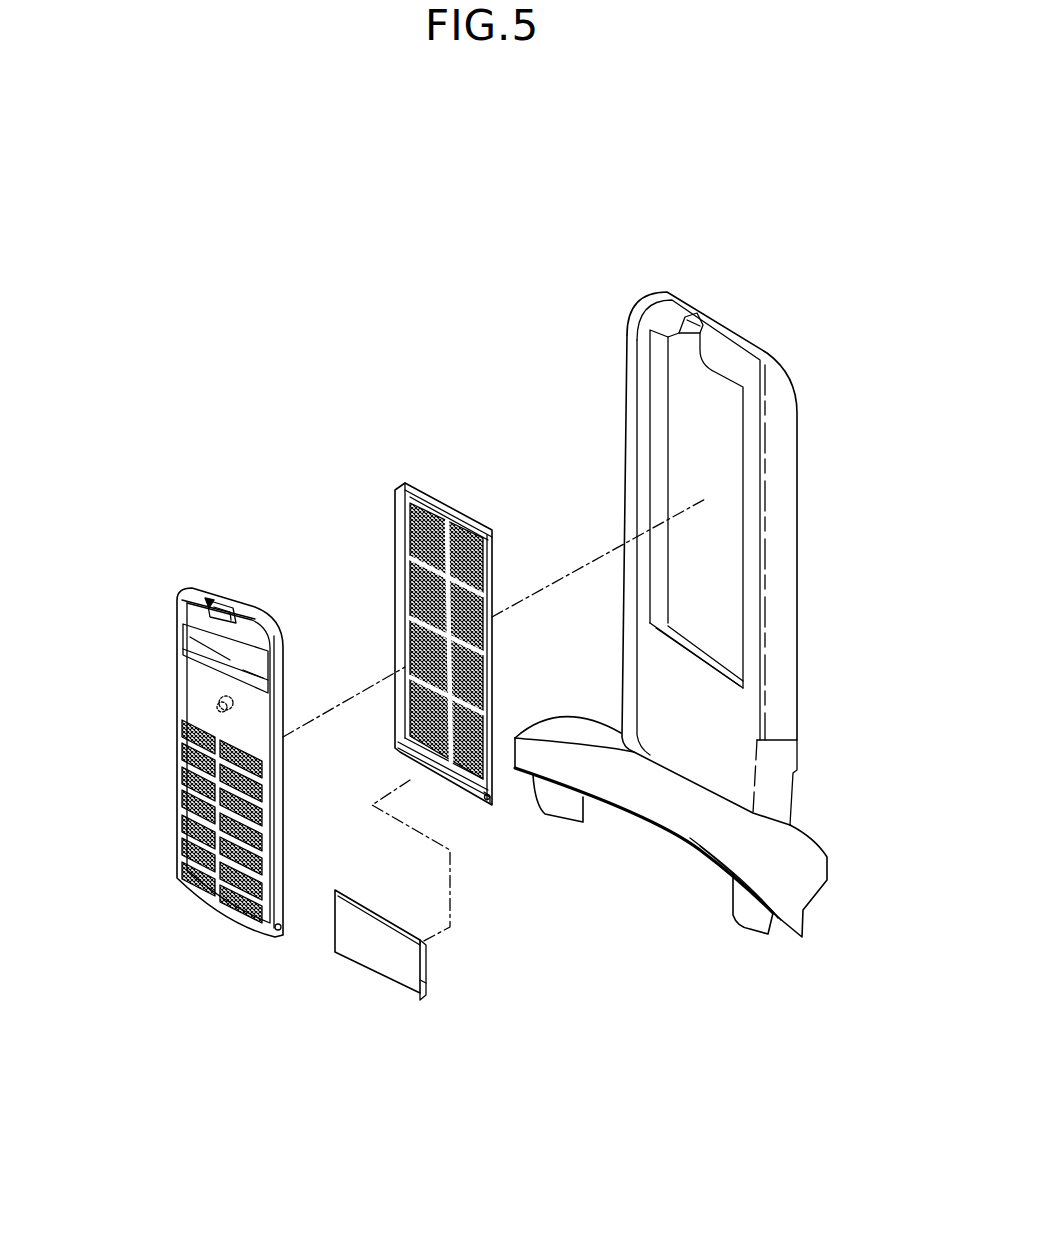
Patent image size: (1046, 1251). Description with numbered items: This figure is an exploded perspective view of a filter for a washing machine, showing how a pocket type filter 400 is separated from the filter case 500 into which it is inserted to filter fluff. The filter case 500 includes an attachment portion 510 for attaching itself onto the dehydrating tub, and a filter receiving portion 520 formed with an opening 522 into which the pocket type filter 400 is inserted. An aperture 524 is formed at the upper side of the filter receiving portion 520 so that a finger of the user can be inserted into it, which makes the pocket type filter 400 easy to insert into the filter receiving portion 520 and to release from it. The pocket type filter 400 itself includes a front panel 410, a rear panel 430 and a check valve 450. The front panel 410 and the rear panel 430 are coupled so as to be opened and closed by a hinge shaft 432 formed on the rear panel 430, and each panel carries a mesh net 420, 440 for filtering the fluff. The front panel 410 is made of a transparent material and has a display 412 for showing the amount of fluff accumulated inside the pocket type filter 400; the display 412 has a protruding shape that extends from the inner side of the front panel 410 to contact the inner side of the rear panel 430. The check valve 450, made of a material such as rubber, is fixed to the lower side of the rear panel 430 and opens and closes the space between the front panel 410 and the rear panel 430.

The pocket type filter 400 is at (272, 410).
The front panel 410 is at (193, 663).
The display 412 is at (222, 708).
The mesh net 420 is at (187, 805).
The rear panel 430 is at (486, 663).
The hinge shaft 432 is at (492, 802).
The mesh net 440 is at (412, 592).
The check valve 450 is at (382, 962).
The filter case 500 is at (615, 943).
The attachment portion 510 is at (700, 824).
The filter receiving portion 520 is at (788, 637).
The opening 522 is at (697, 410).
The aperture 524 is at (693, 318).